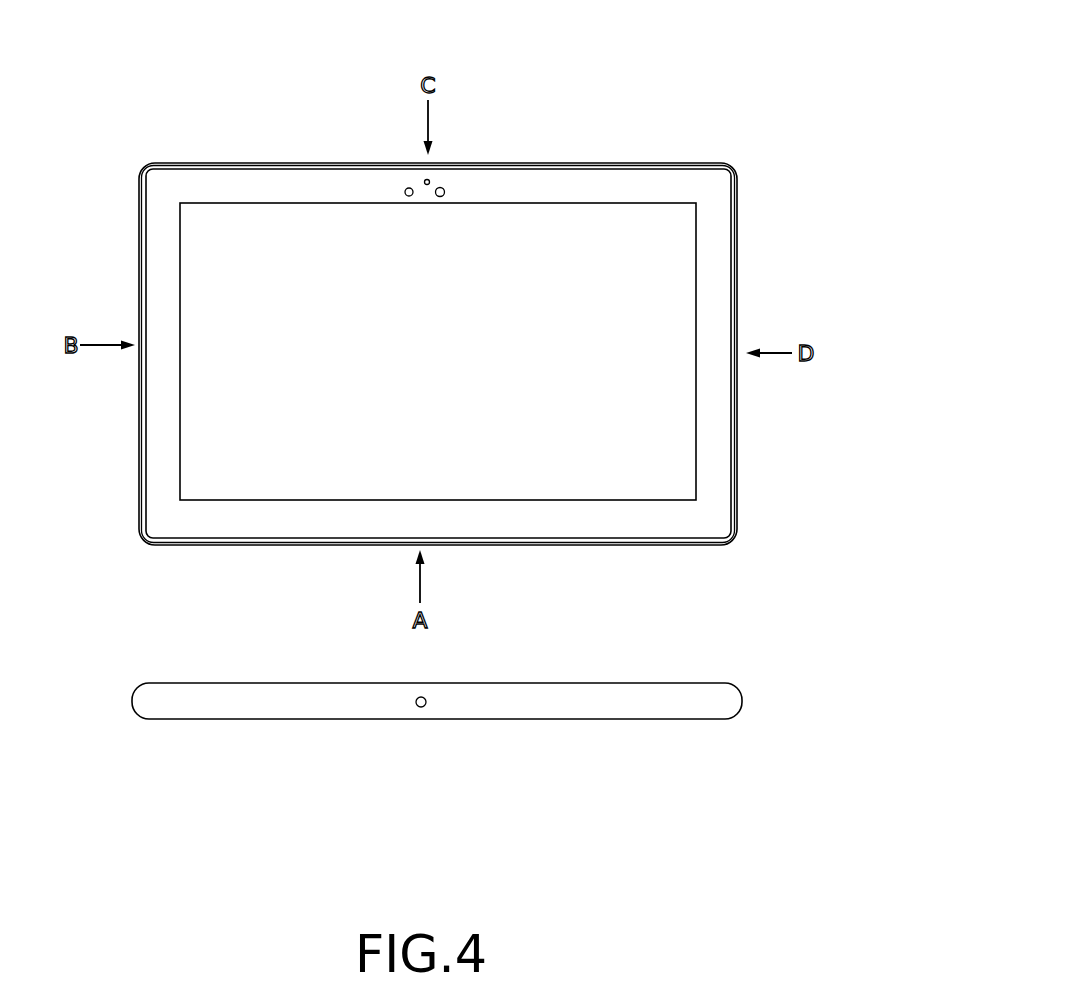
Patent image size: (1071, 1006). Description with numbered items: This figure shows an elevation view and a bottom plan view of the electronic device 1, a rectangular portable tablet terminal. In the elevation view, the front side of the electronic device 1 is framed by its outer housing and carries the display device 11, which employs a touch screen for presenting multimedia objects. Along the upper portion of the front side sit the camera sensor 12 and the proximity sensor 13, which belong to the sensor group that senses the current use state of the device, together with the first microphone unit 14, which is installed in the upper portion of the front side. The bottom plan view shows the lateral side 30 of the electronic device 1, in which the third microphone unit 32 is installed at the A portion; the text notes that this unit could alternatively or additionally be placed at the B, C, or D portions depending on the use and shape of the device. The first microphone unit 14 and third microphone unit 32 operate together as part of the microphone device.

The electronic device 1 is at (703, 110).
The display device 11 is at (202, 237).
The camera sensor 12 is at (406, 189).
The proximity sensor 13 is at (445, 188).
The first microphone unit 14 is at (429, 181).
The lateral side 30 is at (323, 707).
The third microphone unit 32 is at (422, 707).